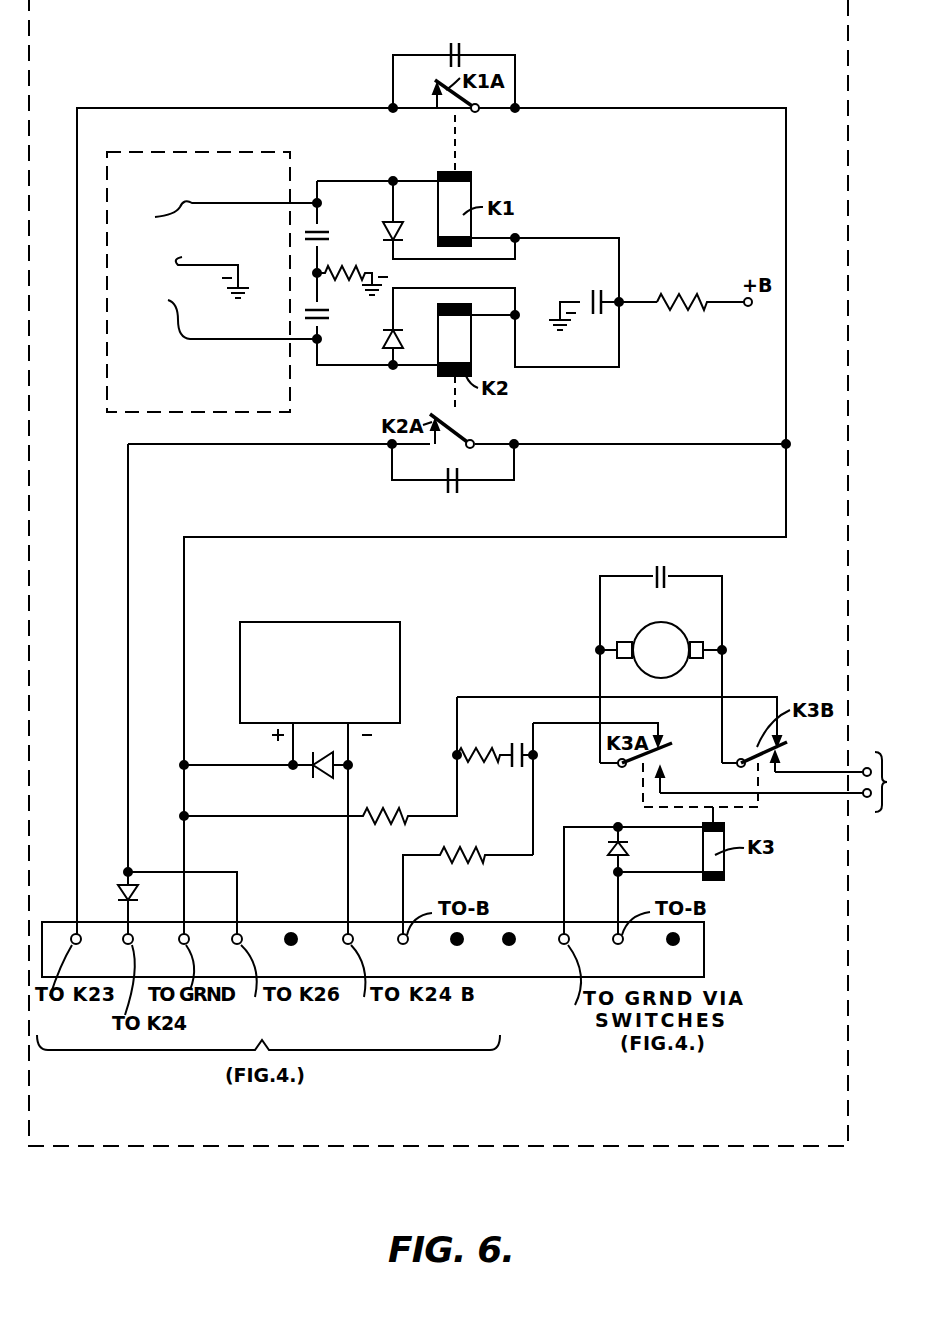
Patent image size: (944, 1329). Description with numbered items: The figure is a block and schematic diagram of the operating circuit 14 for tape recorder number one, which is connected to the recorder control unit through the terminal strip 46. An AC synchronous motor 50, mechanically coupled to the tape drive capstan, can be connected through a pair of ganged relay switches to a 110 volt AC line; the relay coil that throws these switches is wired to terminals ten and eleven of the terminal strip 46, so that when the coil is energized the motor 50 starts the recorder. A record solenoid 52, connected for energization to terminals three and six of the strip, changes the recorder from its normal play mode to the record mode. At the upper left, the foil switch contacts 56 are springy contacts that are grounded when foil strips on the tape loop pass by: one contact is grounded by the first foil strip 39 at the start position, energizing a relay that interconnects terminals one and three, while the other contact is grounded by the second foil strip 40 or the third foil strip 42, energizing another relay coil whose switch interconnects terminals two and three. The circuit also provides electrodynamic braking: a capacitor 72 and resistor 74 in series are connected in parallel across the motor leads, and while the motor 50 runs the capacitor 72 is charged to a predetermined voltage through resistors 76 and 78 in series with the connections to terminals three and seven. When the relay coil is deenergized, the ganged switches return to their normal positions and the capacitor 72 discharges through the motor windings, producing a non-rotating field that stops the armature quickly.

The operating circuit 14 is at (148, 0).
The foil switch contacts 56 is at (214, 235).
The first foil strip 39 is at (223, 211).
The second foil strip 40 is at (226, 314).
The third foil strip 42 is at (212, 277).
The record solenoid 52 is at (345, 632).
The AC synchronous motor 50 is at (659, 630).
The capacitor 72 is at (518, 743).
The resistor 74 is at (490, 765).
The resistor 76 is at (380, 815).
The resistor 78 is at (460, 858).
The terminal strip 46 is at (707, 955).
The 110 volt AC line 110 is at (909, 782).